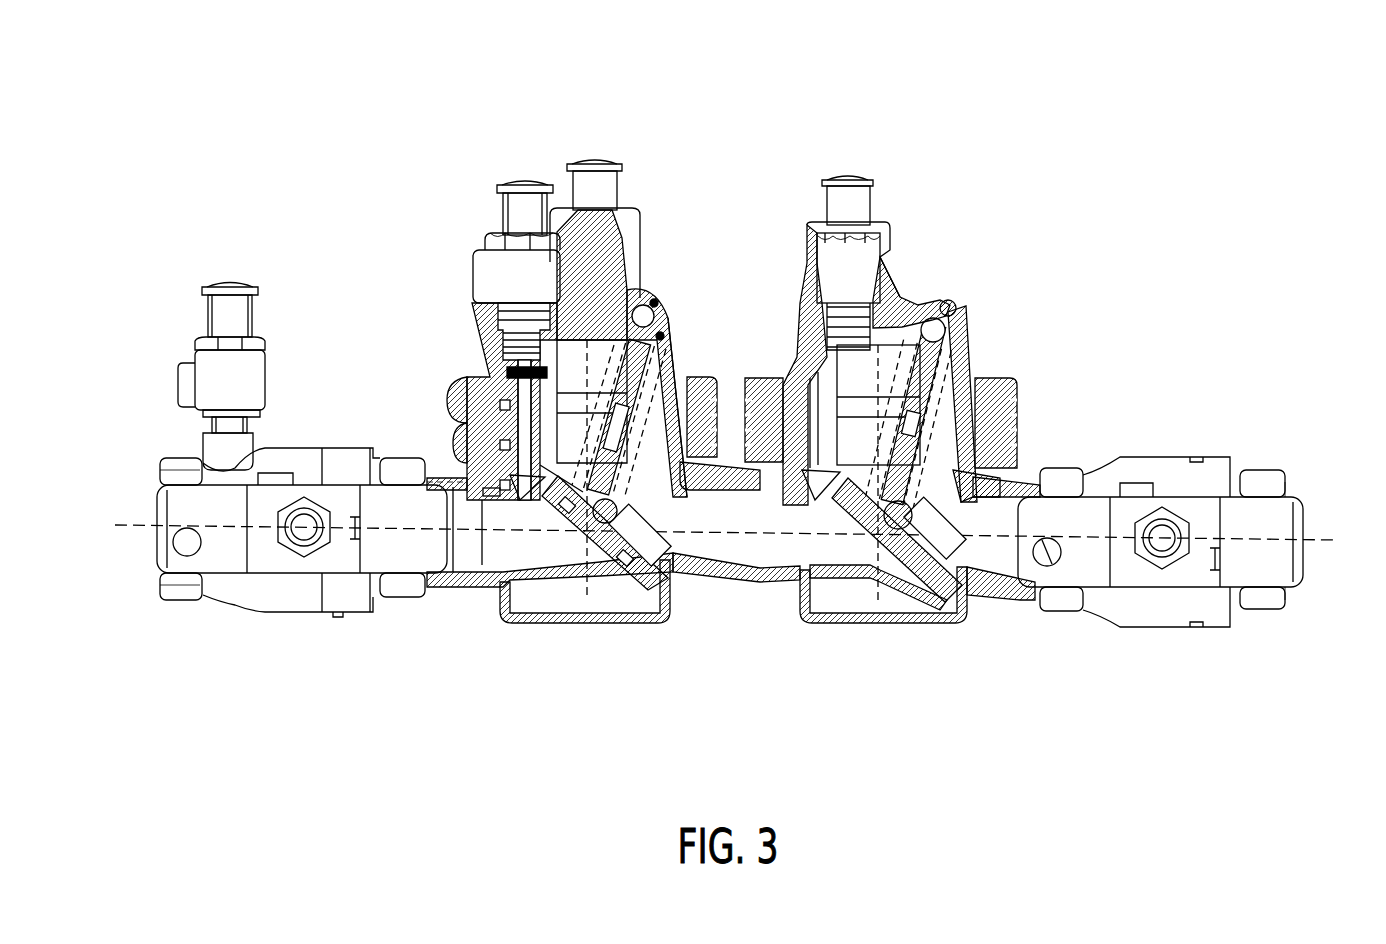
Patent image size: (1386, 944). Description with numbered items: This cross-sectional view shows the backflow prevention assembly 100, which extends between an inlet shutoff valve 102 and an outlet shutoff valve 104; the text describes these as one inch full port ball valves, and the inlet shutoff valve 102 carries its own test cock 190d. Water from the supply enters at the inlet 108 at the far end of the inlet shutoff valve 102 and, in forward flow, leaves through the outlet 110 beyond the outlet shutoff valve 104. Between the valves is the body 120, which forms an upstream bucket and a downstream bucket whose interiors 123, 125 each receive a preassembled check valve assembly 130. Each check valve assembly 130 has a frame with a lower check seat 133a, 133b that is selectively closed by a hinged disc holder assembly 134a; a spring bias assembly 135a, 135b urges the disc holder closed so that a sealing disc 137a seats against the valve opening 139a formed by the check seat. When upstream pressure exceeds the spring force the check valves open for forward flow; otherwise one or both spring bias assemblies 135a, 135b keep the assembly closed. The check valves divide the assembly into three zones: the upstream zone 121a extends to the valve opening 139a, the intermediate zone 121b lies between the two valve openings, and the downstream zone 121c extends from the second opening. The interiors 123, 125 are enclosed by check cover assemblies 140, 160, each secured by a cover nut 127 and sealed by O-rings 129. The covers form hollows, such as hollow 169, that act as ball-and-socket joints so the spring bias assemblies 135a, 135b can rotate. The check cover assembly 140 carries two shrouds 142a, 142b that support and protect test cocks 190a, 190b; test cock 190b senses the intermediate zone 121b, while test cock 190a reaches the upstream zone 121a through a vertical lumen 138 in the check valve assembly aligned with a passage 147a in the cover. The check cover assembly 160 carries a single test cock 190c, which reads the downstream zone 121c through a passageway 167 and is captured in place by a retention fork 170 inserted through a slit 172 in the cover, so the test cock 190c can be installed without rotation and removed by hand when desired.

The backflow prevention assembly 100 is at (290, 153).
The inlet shutoff valve 102 is at (330, 460).
The outlet shutoff valve 104 is at (1148, 462).
The inlet 108 is at (170, 550).
The outlet 110 is at (1305, 525).
The body 120 is at (859, 630).
The upstream zone 121a is at (470, 533).
The intermediate zone 121b is at (743, 585).
The downstream zone 121c is at (1040, 598).
The interior 123 is at (527, 600).
The interior 125 is at (820, 623).
The cover nut 127 is at (720, 384).
The O-rings 129 is at (480, 380).
The check valve assembly 130 is at (537, 508).
The lower check seat 133a is at (590, 548).
The lower check seat 133b is at (943, 498).
The hinged disc holder assembly 134a is at (690, 590).
The spring bias assembly 135a is at (662, 322).
The spring bias assembly 135b is at (965, 347).
The sealing disc 137a is at (647, 542).
The vertical lumen 138 is at (477, 488).
The valve opening 139a is at (658, 557).
The check cover assembly 140 is at (655, 300).
The shroud 142a is at (492, 237).
The shroud 142b is at (627, 215).
The passage 147a is at (480, 332).
The check cover assembly 160 is at (950, 308).
The passageway 167 is at (905, 325).
The hollow 169 is at (955, 327).
The retention fork 170 is at (882, 318).
The slit 172 is at (800, 295).
The test cock 190a is at (523, 207).
The test cock 190b is at (597, 180).
The test cock 190c is at (848, 195).
The test cock 190d is at (196, 368).